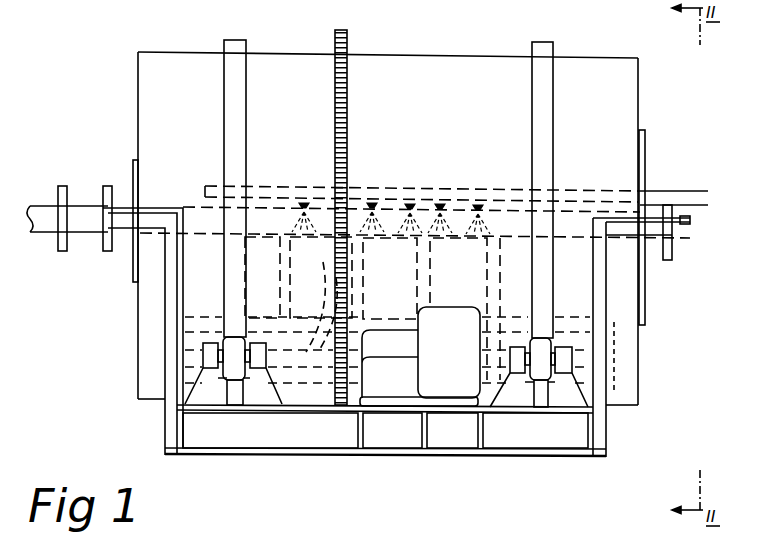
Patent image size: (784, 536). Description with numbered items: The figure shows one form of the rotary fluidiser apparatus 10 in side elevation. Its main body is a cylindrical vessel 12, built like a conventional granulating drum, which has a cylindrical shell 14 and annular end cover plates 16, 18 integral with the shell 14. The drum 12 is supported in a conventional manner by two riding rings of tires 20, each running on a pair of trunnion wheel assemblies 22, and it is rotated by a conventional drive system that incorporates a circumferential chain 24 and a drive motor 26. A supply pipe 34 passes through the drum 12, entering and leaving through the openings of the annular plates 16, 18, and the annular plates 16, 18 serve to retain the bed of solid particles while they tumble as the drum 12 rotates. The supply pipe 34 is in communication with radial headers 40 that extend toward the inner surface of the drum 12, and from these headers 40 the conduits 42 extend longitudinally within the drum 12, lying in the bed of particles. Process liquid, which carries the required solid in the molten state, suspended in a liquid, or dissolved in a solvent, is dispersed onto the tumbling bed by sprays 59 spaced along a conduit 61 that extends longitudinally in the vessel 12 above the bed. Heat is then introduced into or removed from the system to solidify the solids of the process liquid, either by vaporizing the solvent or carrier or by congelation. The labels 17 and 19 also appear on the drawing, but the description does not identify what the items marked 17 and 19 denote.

The rotary fluidiser apparatus 10 is at (119, 114).
The cylindrical vessel 12 is at (138, 52).
The cylindrical shell 14 is at (403, 55).
The annular end cover plate 16 is at (134, 145).
The inlet elbow pipe 17 is at (131, 258).
The annular end cover plate 18 is at (640, 99).
The outlet wall plate 19 is at (646, 279).
The riding rings of tires 20 is at (236, 52).
The trunnion wheel assemblies 22 is at (243, 368).
The circumferential chain 24 is at (341, 30).
The drive motor 26 is at (443, 377).
The supply pipe 34 is at (88, 222).
The radial headers 40 is at (278, 308).
The conduits 42 is at (327, 281).
The sprays 59 is at (410, 203).
The conduit 61 is at (686, 191).